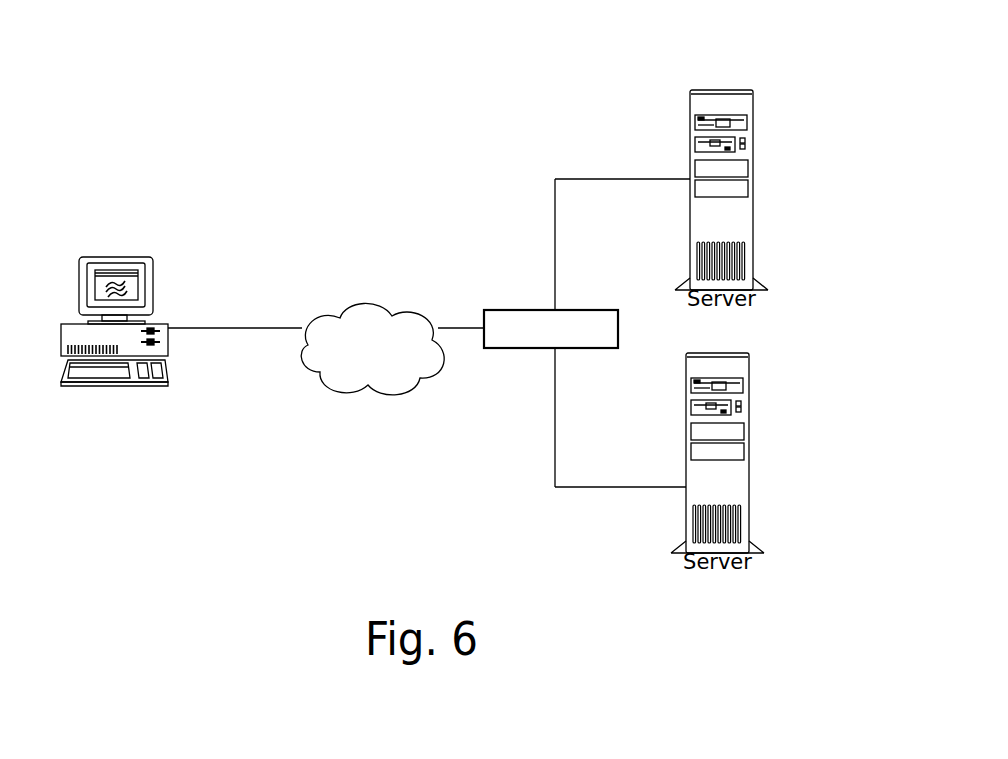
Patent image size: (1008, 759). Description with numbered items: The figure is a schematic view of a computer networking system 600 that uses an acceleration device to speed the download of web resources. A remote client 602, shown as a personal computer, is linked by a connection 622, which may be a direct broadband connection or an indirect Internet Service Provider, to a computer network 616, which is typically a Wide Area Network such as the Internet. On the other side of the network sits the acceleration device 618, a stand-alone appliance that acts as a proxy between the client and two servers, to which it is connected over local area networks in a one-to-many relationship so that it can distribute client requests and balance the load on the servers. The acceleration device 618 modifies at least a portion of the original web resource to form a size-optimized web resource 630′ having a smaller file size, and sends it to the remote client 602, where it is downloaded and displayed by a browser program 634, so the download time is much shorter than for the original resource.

The computer networking system 600 is at (400, 88).
The remote client 602 is at (115, 228).
The browser program 634 is at (130, 268).
The size-optimized web resource 630′ is at (128, 294).
The connection 622 is at (250, 328).
The computer network 616 is at (375, 392).
The acceleration device 618 is at (568, 310).